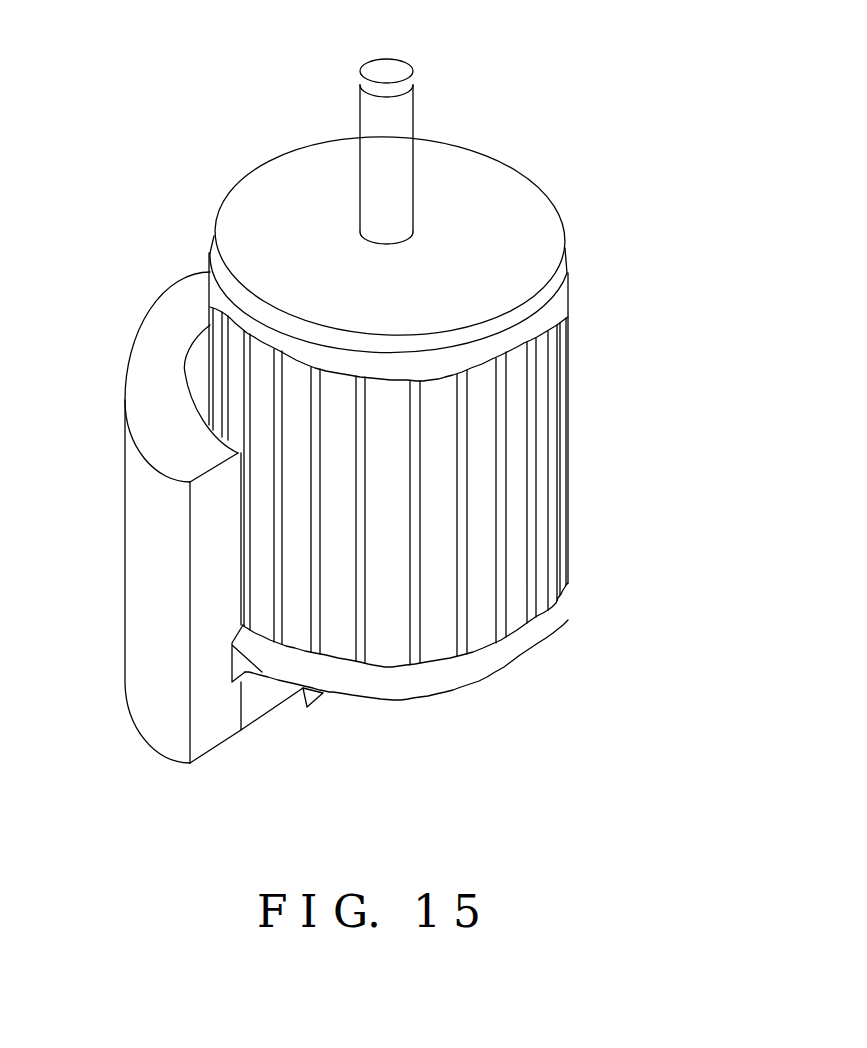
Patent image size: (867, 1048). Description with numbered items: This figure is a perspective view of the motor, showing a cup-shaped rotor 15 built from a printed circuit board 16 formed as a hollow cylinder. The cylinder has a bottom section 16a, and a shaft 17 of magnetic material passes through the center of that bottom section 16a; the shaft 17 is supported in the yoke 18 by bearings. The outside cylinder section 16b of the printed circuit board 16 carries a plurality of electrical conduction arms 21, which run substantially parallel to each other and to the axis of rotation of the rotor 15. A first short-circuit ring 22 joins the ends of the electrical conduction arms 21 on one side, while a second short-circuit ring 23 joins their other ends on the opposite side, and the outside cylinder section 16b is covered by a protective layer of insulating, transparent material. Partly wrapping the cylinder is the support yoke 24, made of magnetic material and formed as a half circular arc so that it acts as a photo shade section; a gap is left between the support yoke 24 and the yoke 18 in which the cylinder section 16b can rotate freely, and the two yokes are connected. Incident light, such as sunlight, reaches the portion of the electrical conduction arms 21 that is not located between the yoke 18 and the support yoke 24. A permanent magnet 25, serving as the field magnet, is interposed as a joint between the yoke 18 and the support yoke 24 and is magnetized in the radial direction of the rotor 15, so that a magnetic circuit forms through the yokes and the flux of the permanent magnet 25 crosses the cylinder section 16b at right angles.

The rotor 15 is at (513, 147).
The printed circuit board 16 is at (528, 193).
The bottom section 16a is at (530, 228).
The outside cylinder section 16b is at (478, 628).
The shaft 17 is at (382, 70).
The yoke 18 is at (307, 702).
The electrical conduction arms 21 is at (507, 617).
The first short-circuit ring 22 is at (533, 318).
The second short-circuit ring 23 is at (433, 680).
The support yoke 24 is at (150, 623).
The permanent magnet 25 is at (275, 700).